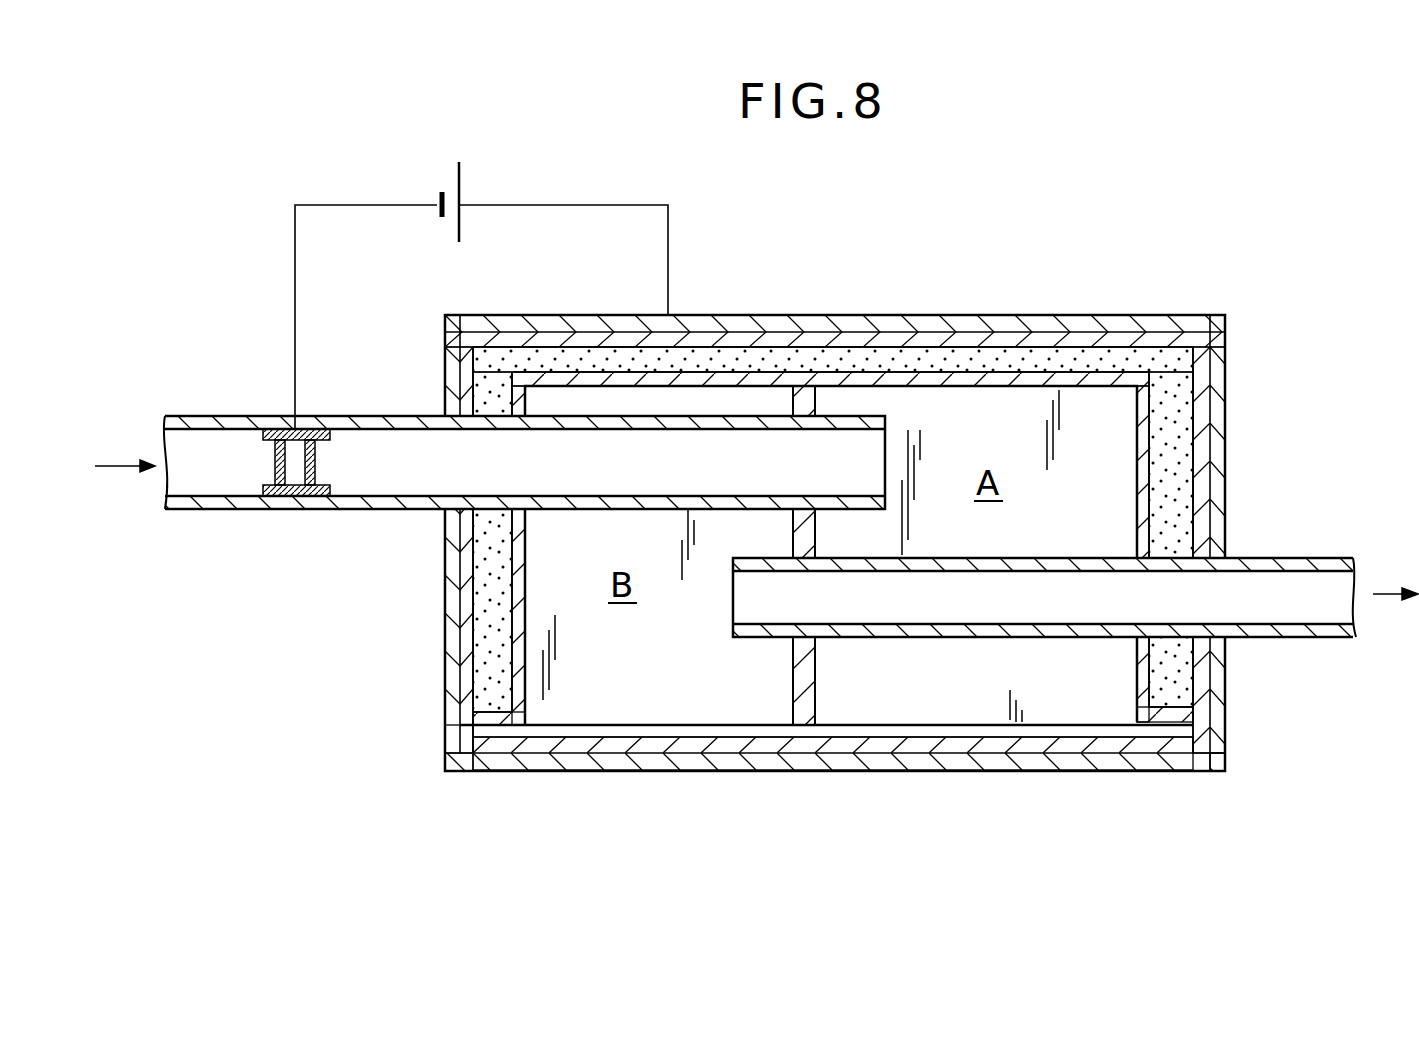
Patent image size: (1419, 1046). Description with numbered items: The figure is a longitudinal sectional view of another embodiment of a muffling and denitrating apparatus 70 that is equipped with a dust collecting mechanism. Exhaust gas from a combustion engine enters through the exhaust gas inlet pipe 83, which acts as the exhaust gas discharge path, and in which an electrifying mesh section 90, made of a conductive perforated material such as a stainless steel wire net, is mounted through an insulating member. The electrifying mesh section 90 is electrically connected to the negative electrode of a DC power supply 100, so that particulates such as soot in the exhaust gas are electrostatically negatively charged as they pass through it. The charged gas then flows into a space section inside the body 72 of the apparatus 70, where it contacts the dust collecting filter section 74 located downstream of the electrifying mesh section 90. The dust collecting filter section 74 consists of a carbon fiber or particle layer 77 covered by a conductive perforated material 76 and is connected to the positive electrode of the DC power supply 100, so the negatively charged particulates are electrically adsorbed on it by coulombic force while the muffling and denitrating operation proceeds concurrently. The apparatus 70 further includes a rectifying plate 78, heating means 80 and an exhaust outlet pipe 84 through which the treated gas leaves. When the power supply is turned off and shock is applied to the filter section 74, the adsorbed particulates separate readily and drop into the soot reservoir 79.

The muffling and denitrating apparatus 70 is at (893, 304).
The body 72 is at (718, 322).
The dust collecting filter section 74 is at (1323, 298).
The conductive perforated material 76 is at (1085, 340).
The carbon fiber or particle layer 77 is at (1178, 370).
The rectifying plate 78 is at (808, 672).
The soot reservoir 79 is at (462, 742).
The heating means 80 is at (612, 745).
The exhaust gas inlet pipe 83 is at (382, 505).
The exhaust outlet pipe 84 is at (1255, 640).
The electrifying mesh section 90 is at (242, 445).
The DC power supply 100 is at (468, 190).